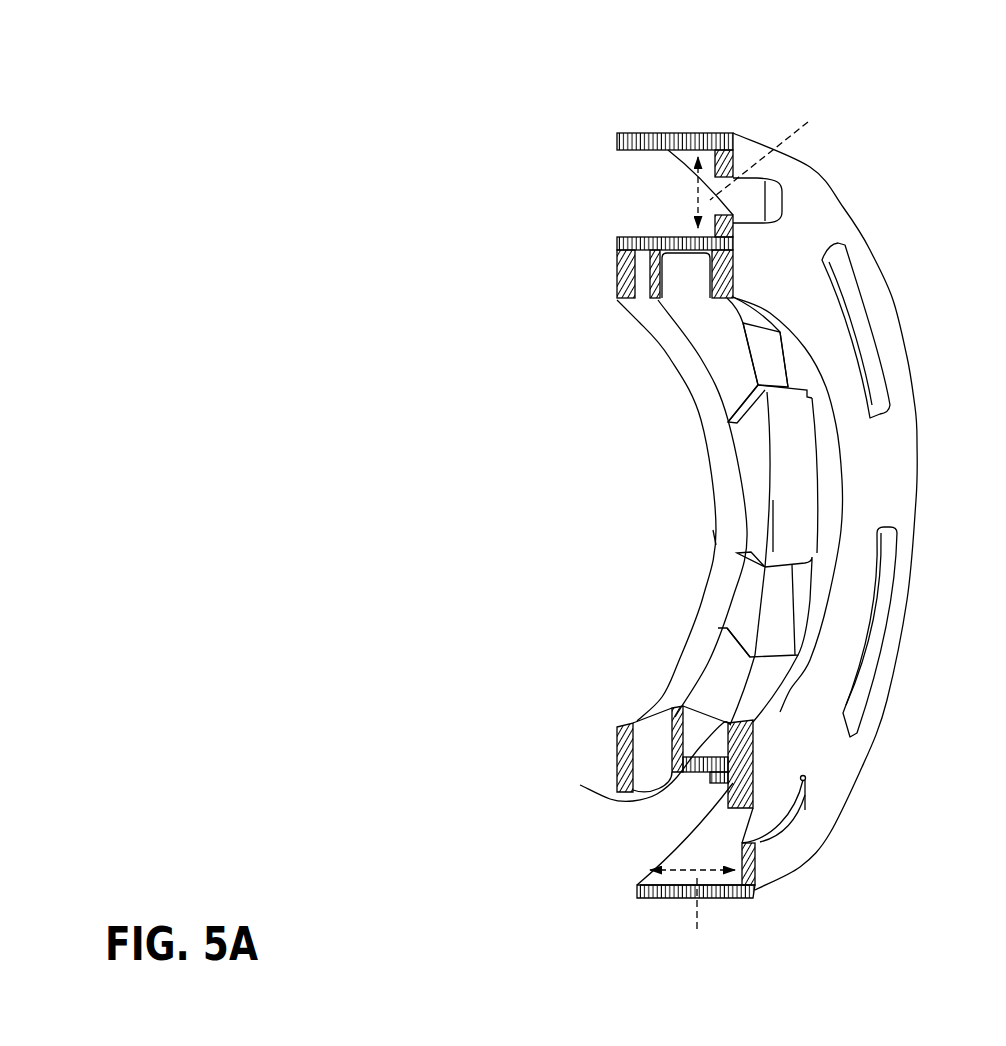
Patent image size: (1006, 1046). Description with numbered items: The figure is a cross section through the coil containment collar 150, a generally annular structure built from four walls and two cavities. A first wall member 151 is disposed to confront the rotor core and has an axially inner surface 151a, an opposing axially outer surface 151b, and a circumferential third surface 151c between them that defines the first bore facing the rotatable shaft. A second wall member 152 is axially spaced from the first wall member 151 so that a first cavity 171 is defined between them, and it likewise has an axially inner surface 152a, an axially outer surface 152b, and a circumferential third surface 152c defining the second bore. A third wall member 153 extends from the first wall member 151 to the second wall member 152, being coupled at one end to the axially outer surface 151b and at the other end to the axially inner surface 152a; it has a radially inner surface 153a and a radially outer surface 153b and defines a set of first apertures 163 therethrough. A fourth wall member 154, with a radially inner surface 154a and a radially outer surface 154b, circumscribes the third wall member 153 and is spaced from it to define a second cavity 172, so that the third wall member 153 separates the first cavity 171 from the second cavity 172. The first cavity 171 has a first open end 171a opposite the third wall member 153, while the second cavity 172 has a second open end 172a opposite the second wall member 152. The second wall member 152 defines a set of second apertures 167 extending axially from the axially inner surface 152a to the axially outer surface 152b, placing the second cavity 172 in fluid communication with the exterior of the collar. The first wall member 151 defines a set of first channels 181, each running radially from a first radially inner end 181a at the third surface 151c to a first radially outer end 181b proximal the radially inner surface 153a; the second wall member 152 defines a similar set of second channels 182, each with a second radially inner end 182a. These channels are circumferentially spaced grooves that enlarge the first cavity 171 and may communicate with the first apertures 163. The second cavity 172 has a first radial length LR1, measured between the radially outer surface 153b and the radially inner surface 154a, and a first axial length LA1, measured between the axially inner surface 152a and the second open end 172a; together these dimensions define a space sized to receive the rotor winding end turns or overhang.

The coil containment collar 150 is at (453, 585).
The first wall member 151 is at (726, 753).
The axially inner surface 151a is at (613, 762).
The axially outer surface 151b is at (690, 695).
The circumferential third surface 151c is at (727, 537).
The second wall member 152 is at (805, 780).
The axially inner surface 152a is at (702, 278).
The axially outer surface 152b is at (775, 780).
The circumferential third surface 152c is at (827, 527).
The third wall member 153 is at (677, 247).
The radially inner surface 153a is at (778, 467).
The radially outer surface 153b is at (733, 785).
The fourth wall member 154 is at (670, 890).
The radially inner surface 154a is at (710, 862).
The radially outer surface 154b is at (640, 128).
The set of first apertures 163 is at (782, 352).
The set of second apertures 167 is at (858, 312).
The first cavity 171 is at (778, 513).
The first open end 171a is at (697, 707).
The second cavity 172 is at (683, 192).
The second open end 172a is at (618, 170).
The set of first channels 181 is at (733, 370).
The first radially inner end 181a is at (727, 398).
The first radially outer end 181b is at (727, 333).
The set of second channels 182 is at (822, 612).
The second radially inner end 182a is at (793, 647).
The first radial length LR1 is at (767, 150).
The first axial length LA1 is at (705, 916).